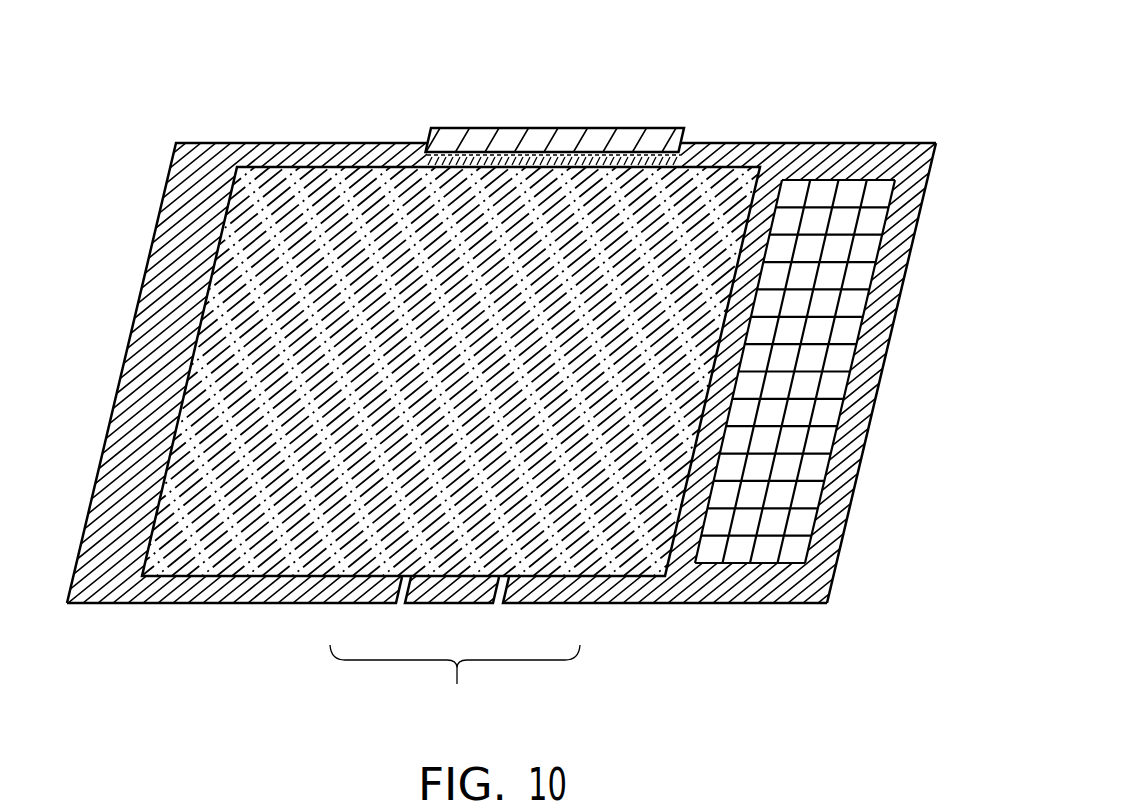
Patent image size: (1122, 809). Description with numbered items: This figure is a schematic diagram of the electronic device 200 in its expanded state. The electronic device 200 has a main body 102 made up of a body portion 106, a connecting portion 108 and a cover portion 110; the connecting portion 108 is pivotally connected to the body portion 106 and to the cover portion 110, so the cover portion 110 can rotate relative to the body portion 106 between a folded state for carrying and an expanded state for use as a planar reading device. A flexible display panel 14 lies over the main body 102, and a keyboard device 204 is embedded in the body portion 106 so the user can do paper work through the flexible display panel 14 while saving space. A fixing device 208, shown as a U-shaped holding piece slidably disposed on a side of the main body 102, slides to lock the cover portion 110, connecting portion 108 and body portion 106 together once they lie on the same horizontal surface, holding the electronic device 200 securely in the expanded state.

The electronic device 200 is at (811, 75).
The flexible display panel 14 is at (318, 215).
The keyboard device 204 is at (852, 302).
The fixing device 208 is at (572, 138).
The main body 102 is at (455, 679).
The cover portion 110 is at (360, 598).
The connecting portion 108 is at (441, 598).
The body portion 106 is at (549, 598).